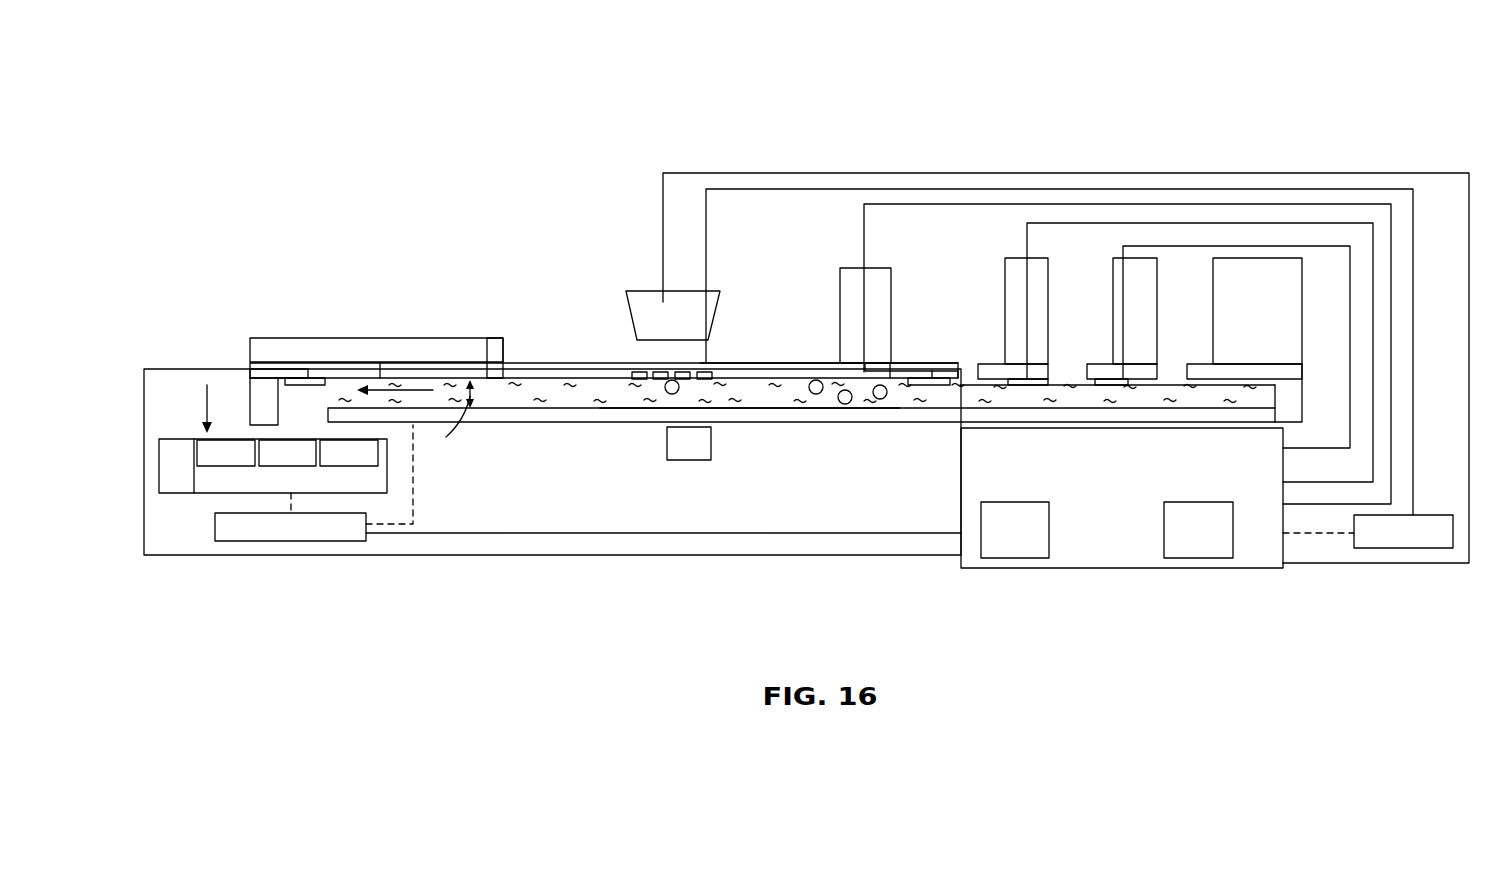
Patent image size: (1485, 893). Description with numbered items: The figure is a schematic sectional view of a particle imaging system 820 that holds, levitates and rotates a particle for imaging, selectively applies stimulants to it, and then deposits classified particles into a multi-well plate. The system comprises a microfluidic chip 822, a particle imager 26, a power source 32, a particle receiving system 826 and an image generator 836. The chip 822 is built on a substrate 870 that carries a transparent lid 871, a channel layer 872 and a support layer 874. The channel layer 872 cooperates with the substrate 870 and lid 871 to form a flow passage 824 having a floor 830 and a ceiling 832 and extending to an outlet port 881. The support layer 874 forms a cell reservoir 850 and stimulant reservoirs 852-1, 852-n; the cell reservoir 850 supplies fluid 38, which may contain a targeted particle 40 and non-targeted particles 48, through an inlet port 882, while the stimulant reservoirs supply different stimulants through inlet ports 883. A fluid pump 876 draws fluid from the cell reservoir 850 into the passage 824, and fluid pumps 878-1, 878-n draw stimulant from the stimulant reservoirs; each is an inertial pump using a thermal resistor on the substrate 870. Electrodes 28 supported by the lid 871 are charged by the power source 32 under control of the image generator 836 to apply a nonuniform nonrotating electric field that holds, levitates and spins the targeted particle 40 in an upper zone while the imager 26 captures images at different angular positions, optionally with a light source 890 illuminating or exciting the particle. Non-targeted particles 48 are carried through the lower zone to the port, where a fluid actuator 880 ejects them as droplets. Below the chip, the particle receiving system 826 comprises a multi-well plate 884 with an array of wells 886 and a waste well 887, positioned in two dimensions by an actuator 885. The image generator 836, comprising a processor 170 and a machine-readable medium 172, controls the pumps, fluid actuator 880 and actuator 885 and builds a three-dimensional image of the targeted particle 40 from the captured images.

The particle imaging system 820 is at (427, 148).
The microfluidic chip 822 is at (244, 326).
The particle receiving system 826 is at (163, 426).
The support layer 874 is at (352, 338).
The ceiling 832 is at (488, 355).
The fluid actuator 880 is at (323, 380).
The outlet port 881 is at (290, 383).
The wells 886 is at (338, 446).
The multi-well plate 884 is at (151, 460).
The waste well 887 is at (156, 478).
The actuator 885 is at (215, 525).
The particle imager 26 is at (626, 312).
The electrodes 28 is at (640, 371).
The transparent lid 871 is at (809, 363).
The cell reservoir 850 is at (891, 296).
The fluid pump 876 is at (946, 380).
The inlet port 882 is at (962, 374).
The first stimulant reservoir 852-1 is at (1048, 300).
The nth stimulant reservoir 852-n is at (1213, 320).
The inlet ports 883 is at (1048, 375).
The first fluid pump 878-1 is at (1026, 386).
The nth fluid pump 878-n is at (1114, 386).
The substrate 870 is at (1302, 373).
The channel layer 872 is at (1302, 413).
The flow passage 824 is at (543, 400).
The floor 830 is at (497, 398).
The fluid 38 is at (745, 402).
The targeted particle 40 is at (668, 394).
The non-targeted particles 48 is at (880, 399).
The light source 890 is at (688, 461).
The image generator 836 is at (1000, 570).
The processor 170 is at (1049, 548).
The non-transitory machine-readable medium 172 is at (1233, 548).
The power source 32 is at (1410, 550).